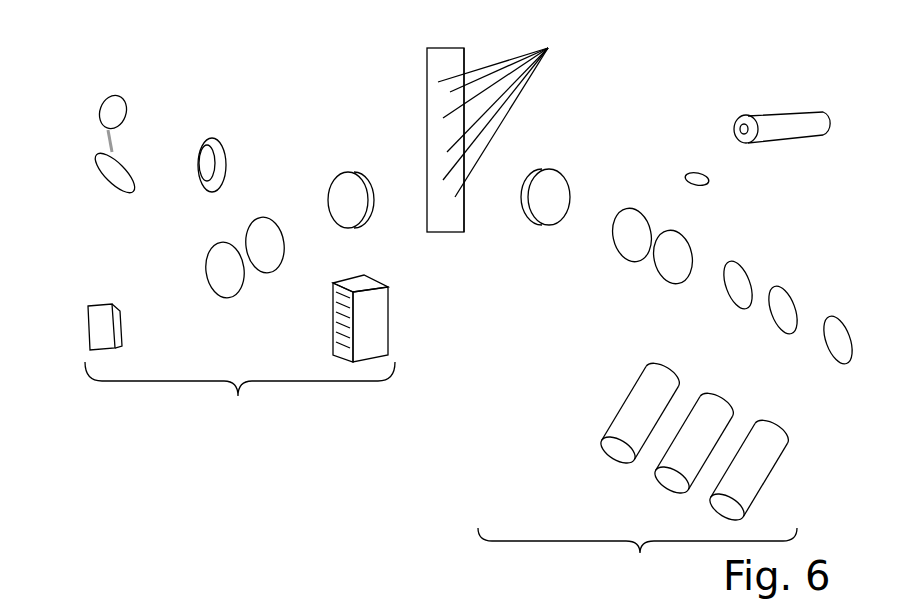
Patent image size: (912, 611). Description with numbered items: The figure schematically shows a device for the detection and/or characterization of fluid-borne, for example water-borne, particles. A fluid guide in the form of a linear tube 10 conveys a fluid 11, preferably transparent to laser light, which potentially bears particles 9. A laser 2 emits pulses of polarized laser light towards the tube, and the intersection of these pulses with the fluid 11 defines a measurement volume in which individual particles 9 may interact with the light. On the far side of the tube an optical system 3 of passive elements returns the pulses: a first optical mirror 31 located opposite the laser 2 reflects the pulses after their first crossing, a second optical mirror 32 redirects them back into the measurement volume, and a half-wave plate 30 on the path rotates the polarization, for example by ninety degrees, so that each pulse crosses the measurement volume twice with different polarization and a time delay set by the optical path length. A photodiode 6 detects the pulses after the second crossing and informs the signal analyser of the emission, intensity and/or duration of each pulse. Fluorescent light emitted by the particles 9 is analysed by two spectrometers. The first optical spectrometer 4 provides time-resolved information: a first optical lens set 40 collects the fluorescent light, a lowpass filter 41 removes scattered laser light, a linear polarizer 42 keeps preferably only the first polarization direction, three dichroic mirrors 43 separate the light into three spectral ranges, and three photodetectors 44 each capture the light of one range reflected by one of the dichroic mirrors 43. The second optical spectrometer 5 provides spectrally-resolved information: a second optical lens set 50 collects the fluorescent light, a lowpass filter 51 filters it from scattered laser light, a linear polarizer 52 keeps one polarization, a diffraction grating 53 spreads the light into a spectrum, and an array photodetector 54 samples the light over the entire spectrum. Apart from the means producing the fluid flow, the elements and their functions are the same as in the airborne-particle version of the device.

The laser 2 is at (706, 180).
The optical system 3 is at (184, 86).
The first optical spectrometer 4 is at (637, 559).
The second optical spectrometer 5 is at (240, 400).
The photodiode 6 is at (773, 120).
The particles 9 is at (497, 103).
The linear tube 10 is at (425, 128).
The fluid 11 is at (433, 100).
The half-wave plate 30 is at (220, 158).
The first optical mirror 31 is at (104, 107).
The second optical mirror 32 is at (104, 170).
The first optical lens set 40 is at (545, 210).
The lowpass filter 41 is at (622, 250).
The linear polarizer 42 is at (668, 268).
The dichroic mirrors 43 is at (838, 330).
The photodetectors 44 is at (718, 510).
The second optical lens set 50 is at (330, 197).
The lowpass filter 51 is at (258, 240).
The linear polarizer 52 is at (215, 268).
The diffraction grating 53 is at (98, 330).
The array photodetector 54 is at (367, 338).